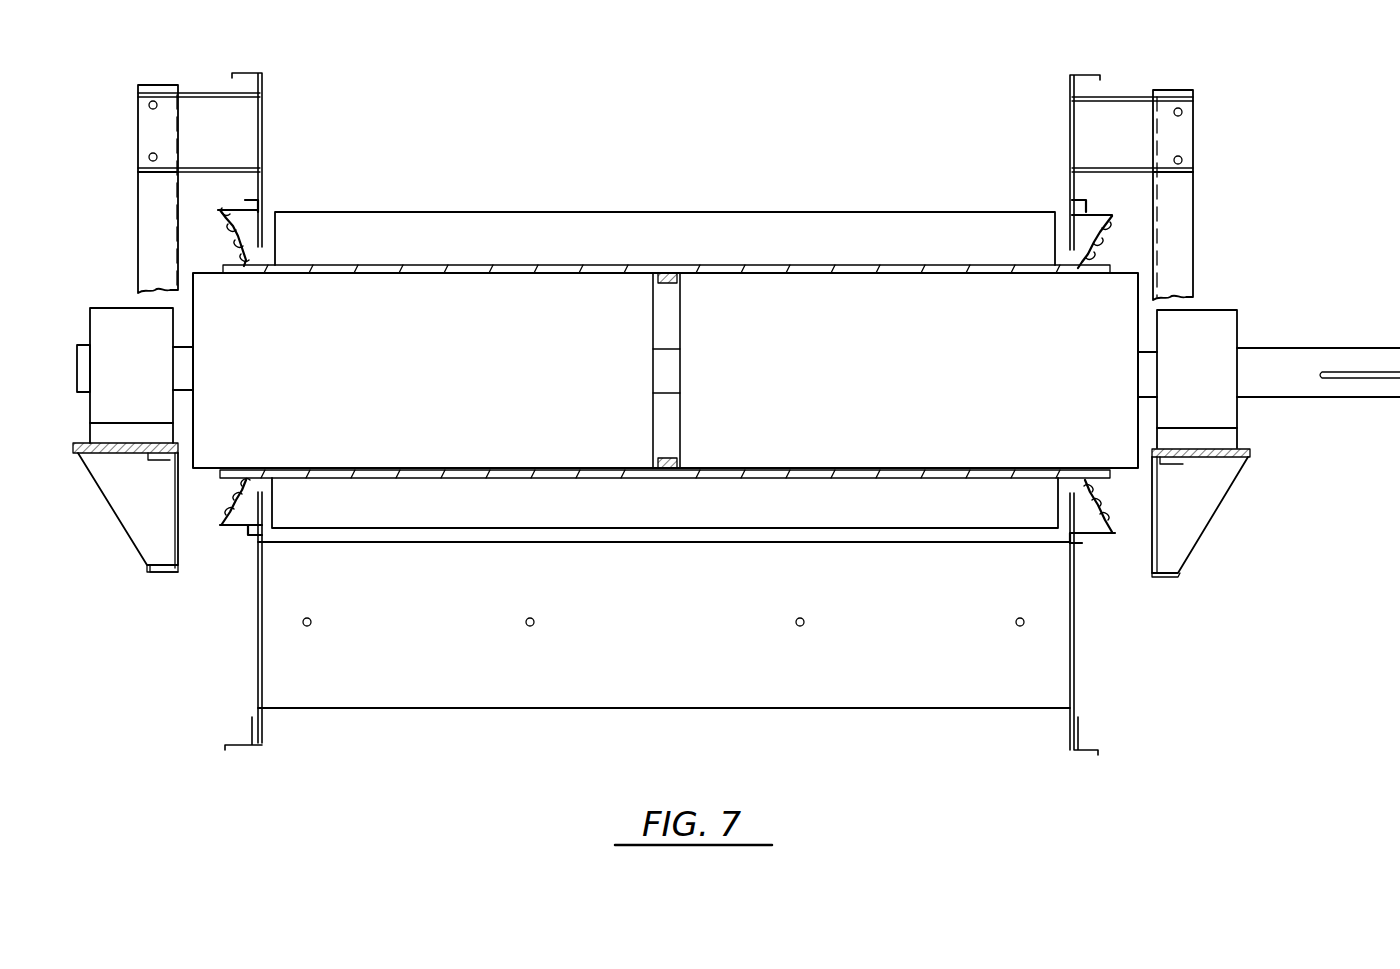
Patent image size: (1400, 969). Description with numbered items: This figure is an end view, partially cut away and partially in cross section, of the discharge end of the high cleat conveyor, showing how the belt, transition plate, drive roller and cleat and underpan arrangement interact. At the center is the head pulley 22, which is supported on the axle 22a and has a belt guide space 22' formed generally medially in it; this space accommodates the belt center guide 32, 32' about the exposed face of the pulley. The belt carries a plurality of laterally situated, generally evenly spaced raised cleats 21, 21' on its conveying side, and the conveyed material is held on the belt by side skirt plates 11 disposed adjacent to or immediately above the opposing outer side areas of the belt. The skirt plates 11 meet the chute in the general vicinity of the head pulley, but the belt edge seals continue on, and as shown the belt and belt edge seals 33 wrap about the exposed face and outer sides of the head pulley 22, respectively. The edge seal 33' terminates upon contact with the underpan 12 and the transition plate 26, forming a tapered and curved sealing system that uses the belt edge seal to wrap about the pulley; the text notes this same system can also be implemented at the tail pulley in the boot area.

The side skirt plate 11 is at (262, 137).
The underpan 12 is at (258, 545).
The cleat 21 is at (665, 194).
The cleat 21' is at (665, 547).
The head pulley 22 is at (753, 347).
The belt guide space 22' is at (729, 370).
The axle 22a is at (1272, 378).
The transition plate 26 is at (1035, 667).
The belt center guide 32 is at (686, 212).
The belt center guide 32' is at (734, 452).
The belt edge seal 33 is at (665, 207).
The belt edge seal 33' is at (600, 556).